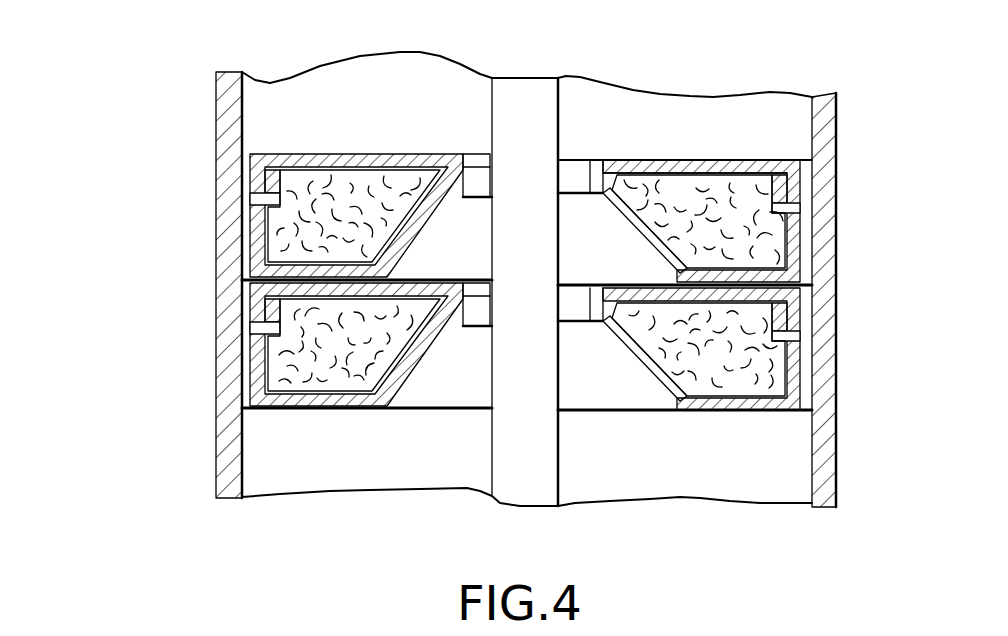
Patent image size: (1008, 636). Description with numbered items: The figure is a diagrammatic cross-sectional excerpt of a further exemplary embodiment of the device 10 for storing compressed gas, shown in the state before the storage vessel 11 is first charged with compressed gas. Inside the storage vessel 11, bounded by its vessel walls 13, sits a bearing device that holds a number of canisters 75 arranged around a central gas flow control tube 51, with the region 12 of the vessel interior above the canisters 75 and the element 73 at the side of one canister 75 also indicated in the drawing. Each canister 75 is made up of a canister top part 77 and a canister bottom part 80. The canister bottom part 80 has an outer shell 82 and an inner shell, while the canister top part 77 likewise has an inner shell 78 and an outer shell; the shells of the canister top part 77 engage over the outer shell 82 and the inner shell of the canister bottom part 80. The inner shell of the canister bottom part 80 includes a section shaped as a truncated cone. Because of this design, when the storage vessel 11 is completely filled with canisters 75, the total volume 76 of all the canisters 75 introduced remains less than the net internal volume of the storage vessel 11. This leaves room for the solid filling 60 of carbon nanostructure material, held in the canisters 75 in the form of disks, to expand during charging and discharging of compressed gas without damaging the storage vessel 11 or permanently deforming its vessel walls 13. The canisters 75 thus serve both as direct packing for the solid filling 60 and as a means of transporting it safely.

The device for storing compressed gas 10 is at (185, 78).
The storage vessel 11 is at (217, 153).
The cell module region 12 is at (372, 108).
The vessel walls 13 is at (227, 368).
The gas flow control tube 51 is at (510, 87).
The solid filling 60 is at (727, 385).
The container 73 is at (255, 303).
The canisters 75 is at (693, 153).
The volume of the canisters 76 is at (755, 162).
The canister top part 77 is at (651, 156).
The inner shell of the canister top part 78 is at (477, 183).
The canister bottom part 80 is at (637, 255).
The outer shell of the canister bottom part 82 is at (252, 398).